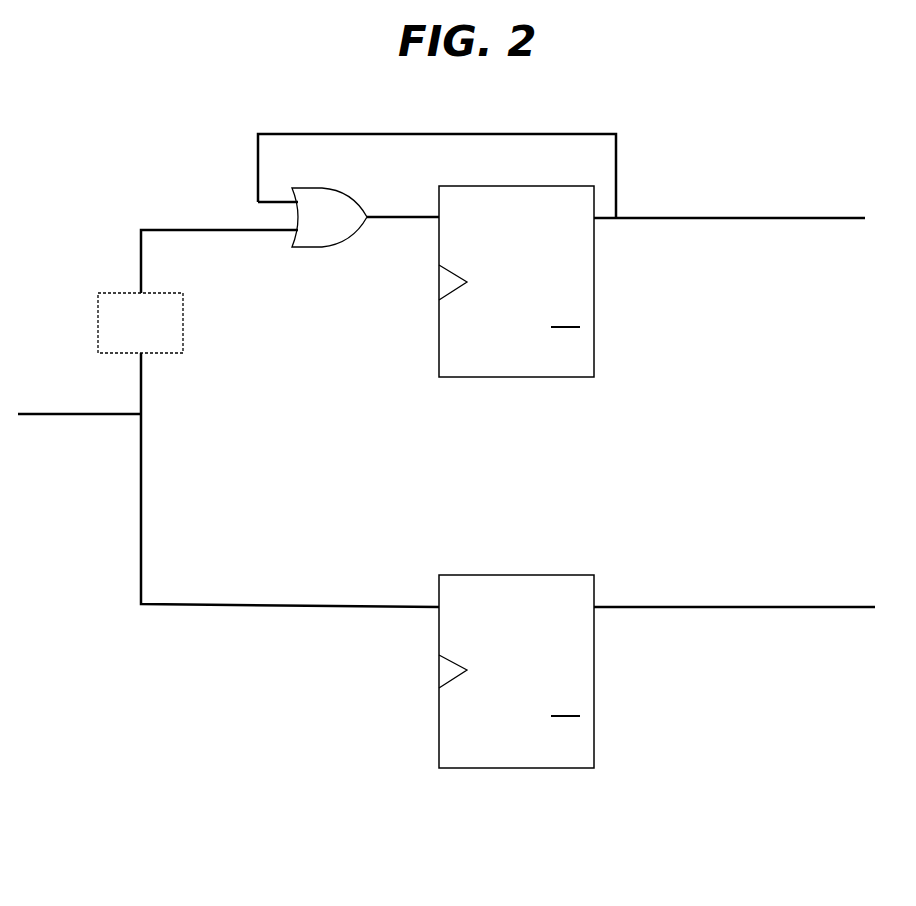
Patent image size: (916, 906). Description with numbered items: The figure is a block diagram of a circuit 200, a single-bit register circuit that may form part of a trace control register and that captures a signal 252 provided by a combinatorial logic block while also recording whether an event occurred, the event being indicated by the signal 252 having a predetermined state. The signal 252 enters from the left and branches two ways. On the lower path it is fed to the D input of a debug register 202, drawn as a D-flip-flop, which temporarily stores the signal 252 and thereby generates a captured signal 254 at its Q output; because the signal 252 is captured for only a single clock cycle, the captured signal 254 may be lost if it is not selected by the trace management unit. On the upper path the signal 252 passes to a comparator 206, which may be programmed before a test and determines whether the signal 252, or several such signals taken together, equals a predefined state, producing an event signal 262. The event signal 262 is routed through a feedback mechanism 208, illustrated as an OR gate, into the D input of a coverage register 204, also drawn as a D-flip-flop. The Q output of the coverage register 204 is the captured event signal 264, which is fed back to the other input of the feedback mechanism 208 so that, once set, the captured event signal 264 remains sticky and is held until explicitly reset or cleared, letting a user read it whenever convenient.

The circuit 200 is at (566, 49).
The debug register 202 is at (516, 688).
The coverage register 204 is at (516, 297).
The comparator 206 is at (140, 323).
The feedback mechanism 208 is at (437, 190).
The signal 252 is at (228, 480).
The captured signal 254 is at (735, 595).
The event signal 262 is at (219, 248).
The captured event signal 264 is at (732, 204).